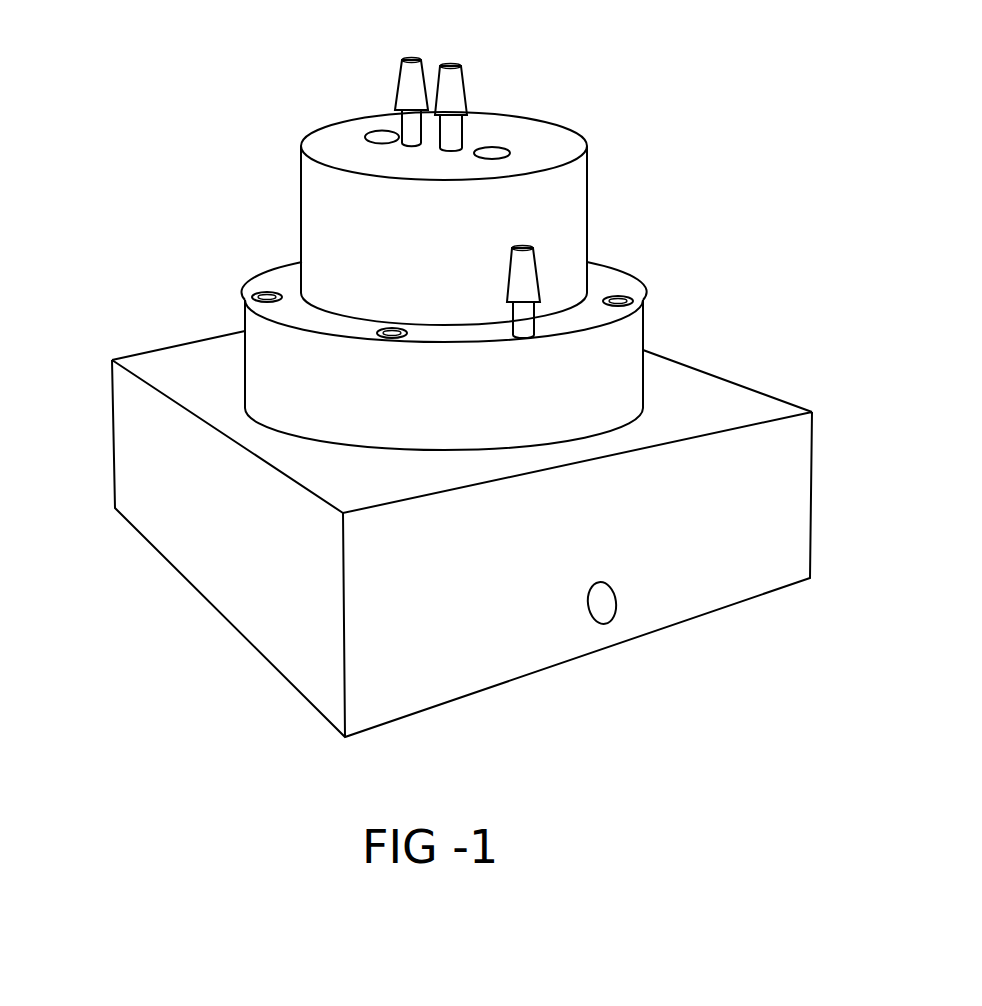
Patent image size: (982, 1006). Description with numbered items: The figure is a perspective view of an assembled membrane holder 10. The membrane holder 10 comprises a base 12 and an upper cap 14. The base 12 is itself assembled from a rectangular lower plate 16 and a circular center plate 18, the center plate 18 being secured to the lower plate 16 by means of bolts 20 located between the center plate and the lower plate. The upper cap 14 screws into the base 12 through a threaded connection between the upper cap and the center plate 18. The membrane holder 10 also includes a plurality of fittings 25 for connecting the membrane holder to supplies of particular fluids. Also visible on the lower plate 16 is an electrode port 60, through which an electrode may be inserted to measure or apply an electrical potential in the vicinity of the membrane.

The membrane holder 10 is at (94, 232).
The base 12 is at (763, 308).
The upper cap 14 is at (575, 194).
The lower plate 16 is at (800, 499).
The center plate 18 is at (244, 322).
The bolts 20 is at (268, 292).
The fittings 25 is at (405, 75).
The electrode port 60 is at (606, 594).